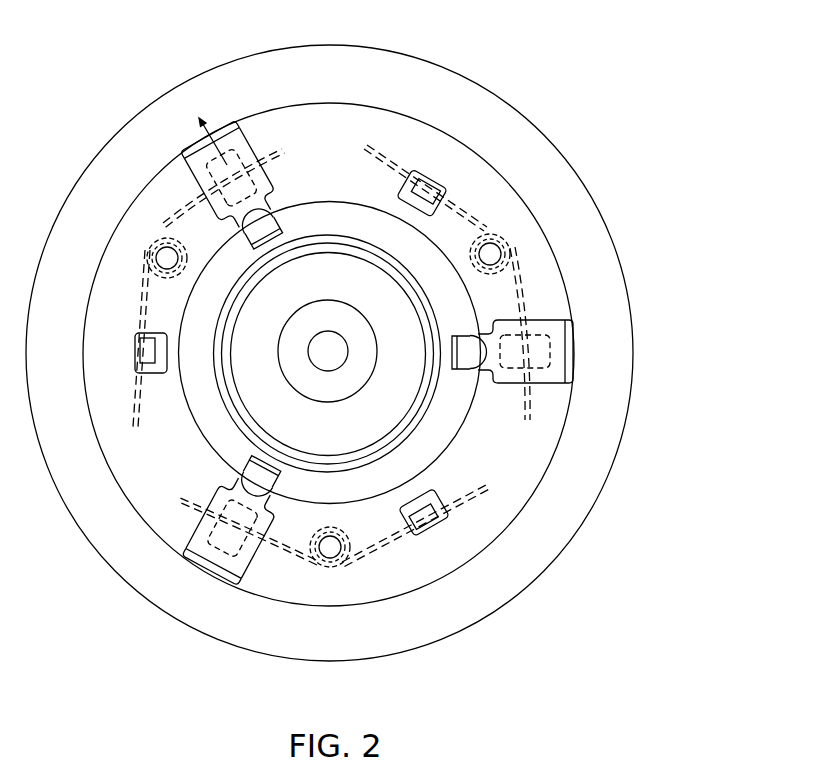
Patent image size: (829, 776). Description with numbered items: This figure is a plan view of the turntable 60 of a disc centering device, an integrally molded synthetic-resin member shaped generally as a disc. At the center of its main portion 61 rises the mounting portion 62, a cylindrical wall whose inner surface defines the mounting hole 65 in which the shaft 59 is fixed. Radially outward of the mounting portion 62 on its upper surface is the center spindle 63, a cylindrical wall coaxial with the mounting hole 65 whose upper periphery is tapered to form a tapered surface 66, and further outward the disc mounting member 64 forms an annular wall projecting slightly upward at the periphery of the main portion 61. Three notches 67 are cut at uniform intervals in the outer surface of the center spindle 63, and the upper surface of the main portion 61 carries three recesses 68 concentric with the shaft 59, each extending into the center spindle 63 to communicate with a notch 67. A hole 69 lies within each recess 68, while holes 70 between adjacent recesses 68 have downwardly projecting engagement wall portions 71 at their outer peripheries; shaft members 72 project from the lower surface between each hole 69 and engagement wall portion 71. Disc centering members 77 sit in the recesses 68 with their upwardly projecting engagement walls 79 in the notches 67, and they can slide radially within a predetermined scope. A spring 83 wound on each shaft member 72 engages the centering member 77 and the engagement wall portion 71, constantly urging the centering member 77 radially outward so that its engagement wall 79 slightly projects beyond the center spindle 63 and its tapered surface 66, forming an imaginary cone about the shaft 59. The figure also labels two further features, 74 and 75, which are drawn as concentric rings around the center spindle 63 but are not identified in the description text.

The shaft 59 is at (341, 354).
The turntable 60 is at (449, 65).
The main portion 61 is at (467, 172).
The mounting portion 62 is at (342, 384).
The center spindle 63 is at (423, 430).
The disc mounting member 64 is at (553, 190).
The mounting hole 65 is at (362, 327).
The tapered surface 66 is at (450, 405).
The notch 67 is at (477, 335).
The recess 68 is at (574, 348).
The hole 69 is at (571, 369).
The hole 70 is at (163, 375).
The engagement wall portion 71 is at (158, 333).
The shaft member 72 is at (512, 253).
The inner ring 74 is at (242, 292).
The inner annulus 75 is at (242, 357).
The disc centering member 77 is at (540, 330).
The engagement wall 79 is at (446, 367).
The spring 83 is at (468, 205).